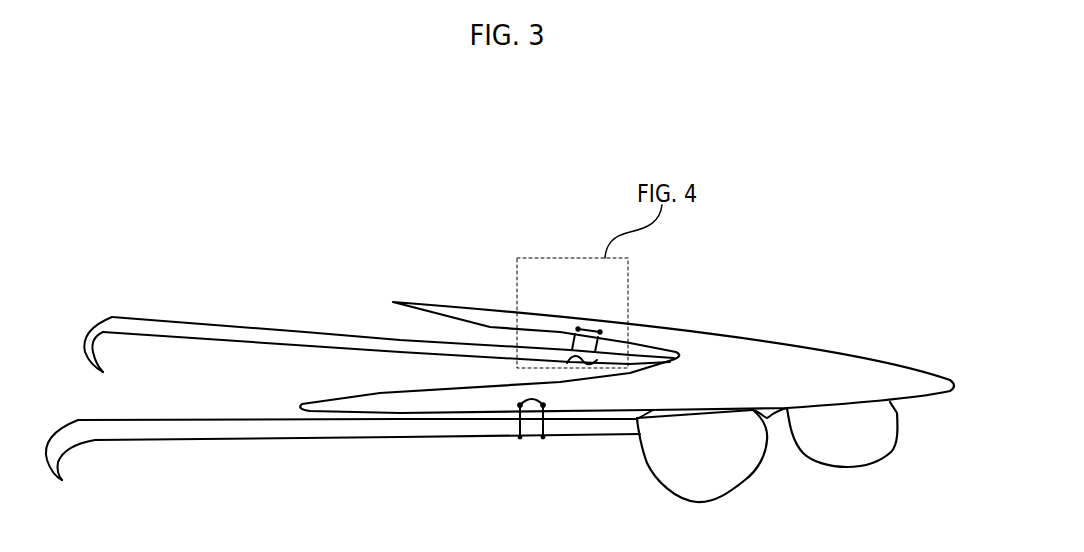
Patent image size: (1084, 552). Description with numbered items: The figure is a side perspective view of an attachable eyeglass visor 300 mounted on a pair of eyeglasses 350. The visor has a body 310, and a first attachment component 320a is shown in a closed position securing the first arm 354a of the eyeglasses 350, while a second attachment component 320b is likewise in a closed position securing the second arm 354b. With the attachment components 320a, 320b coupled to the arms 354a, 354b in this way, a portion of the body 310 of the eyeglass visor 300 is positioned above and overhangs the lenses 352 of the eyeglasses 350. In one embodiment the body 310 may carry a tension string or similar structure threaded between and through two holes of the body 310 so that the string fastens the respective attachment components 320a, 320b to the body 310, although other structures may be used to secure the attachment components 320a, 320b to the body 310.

The eyeglass visor 300 is at (681, 291).
The body 310 is at (815, 348).
The first attachment component 320a is at (571, 345).
The second attachment component 320b is at (543, 440).
The eyeglasses 350 is at (897, 492).
The lenses 352 is at (762, 470).
The first arm 354a is at (305, 332).
The second arm 354b is at (440, 427).